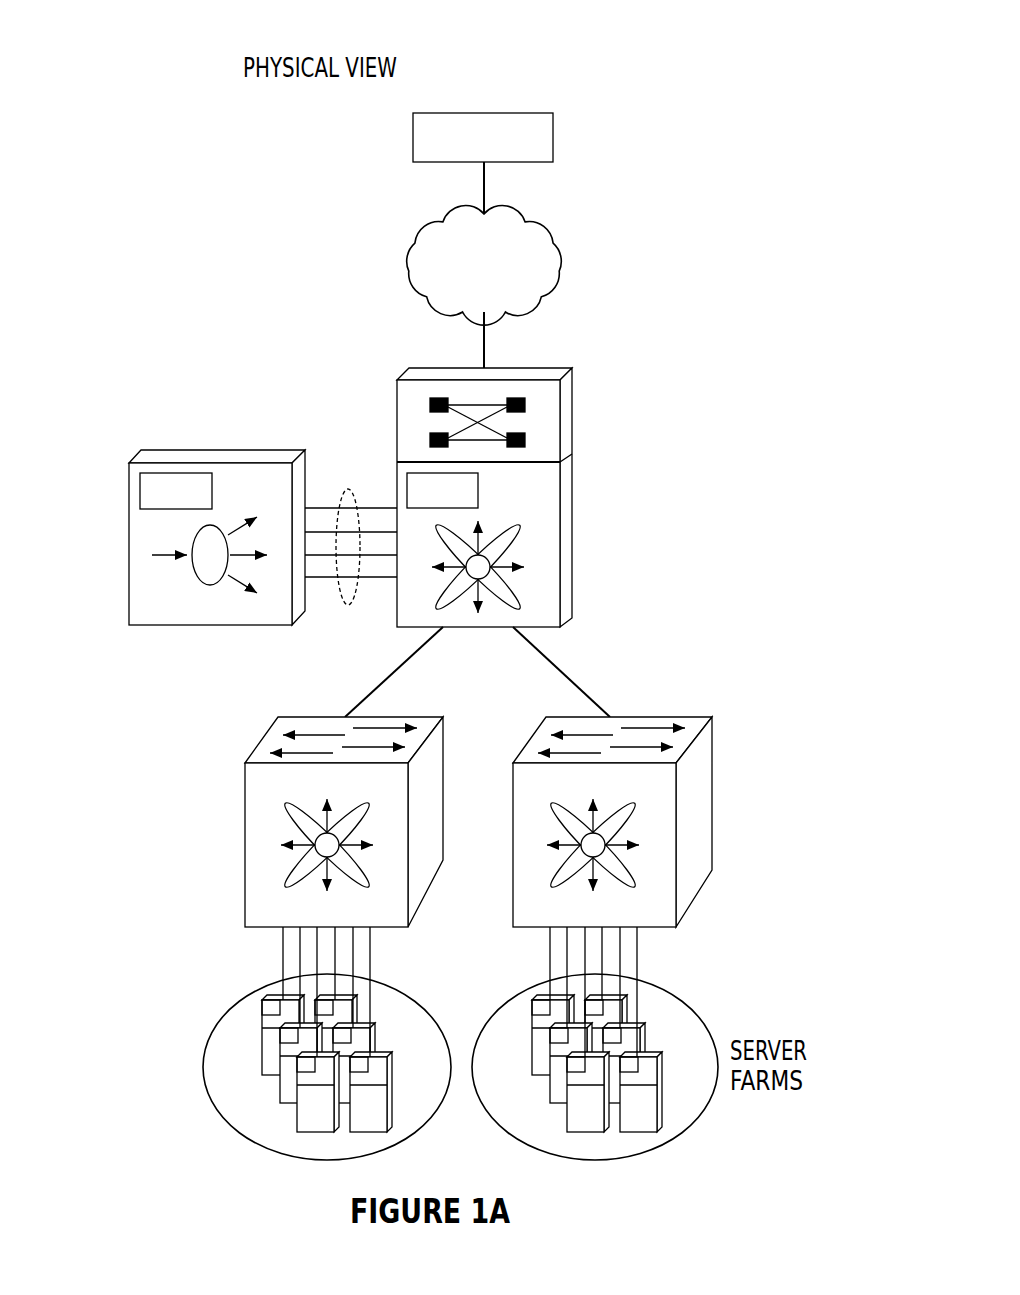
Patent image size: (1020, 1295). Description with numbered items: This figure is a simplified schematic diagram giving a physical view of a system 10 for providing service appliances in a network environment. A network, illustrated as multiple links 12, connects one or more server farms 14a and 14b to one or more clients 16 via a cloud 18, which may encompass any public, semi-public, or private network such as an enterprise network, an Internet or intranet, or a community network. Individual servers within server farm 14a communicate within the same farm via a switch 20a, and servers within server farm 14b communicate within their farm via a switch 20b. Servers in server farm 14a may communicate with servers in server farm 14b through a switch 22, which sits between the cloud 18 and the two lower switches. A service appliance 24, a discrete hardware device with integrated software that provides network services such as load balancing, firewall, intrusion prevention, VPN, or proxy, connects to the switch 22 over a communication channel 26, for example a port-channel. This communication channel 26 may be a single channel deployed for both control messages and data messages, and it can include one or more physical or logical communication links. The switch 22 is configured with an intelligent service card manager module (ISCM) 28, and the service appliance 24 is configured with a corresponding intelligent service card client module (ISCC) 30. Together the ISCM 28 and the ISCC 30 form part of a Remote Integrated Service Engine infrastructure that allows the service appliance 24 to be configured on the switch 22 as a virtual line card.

The system 10 is at (522, 62).
The links 12 is at (572, 671).
The server farm 14a is at (225, 1120).
The server farm 14b is at (694, 1116).
The clients 16 is at (553, 137).
The cloud 18 is at (568, 266).
The switch 20a is at (245, 835).
The switch 20b is at (700, 830).
The switch 22 is at (518, 497).
The service appliance 24 is at (182, 537).
The communication channel 26 is at (350, 487).
The intelligent service card manager module (ISCM) 28 is at (478, 491).
The intelligent service card client module (ISCC) 30 is at (212, 491).